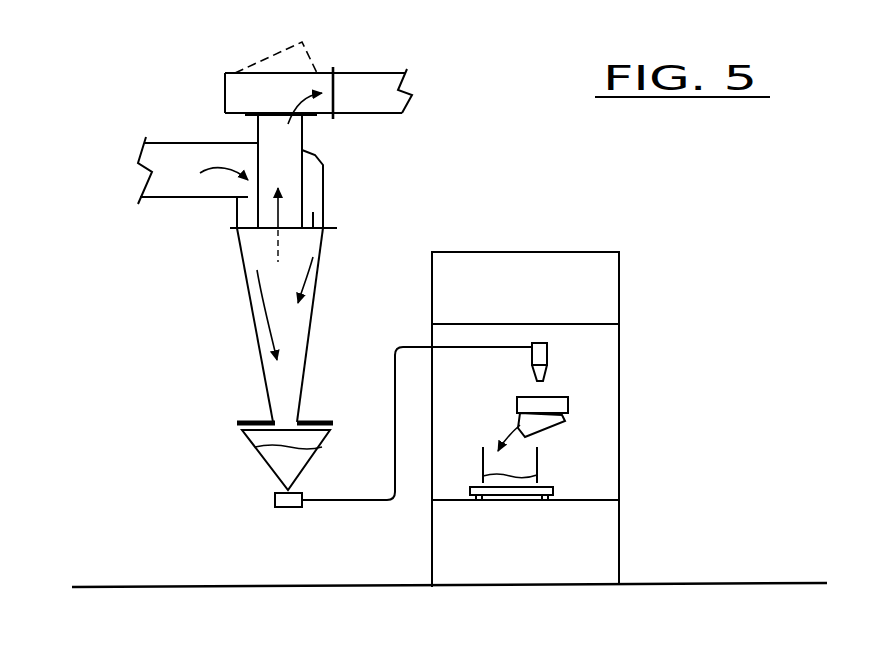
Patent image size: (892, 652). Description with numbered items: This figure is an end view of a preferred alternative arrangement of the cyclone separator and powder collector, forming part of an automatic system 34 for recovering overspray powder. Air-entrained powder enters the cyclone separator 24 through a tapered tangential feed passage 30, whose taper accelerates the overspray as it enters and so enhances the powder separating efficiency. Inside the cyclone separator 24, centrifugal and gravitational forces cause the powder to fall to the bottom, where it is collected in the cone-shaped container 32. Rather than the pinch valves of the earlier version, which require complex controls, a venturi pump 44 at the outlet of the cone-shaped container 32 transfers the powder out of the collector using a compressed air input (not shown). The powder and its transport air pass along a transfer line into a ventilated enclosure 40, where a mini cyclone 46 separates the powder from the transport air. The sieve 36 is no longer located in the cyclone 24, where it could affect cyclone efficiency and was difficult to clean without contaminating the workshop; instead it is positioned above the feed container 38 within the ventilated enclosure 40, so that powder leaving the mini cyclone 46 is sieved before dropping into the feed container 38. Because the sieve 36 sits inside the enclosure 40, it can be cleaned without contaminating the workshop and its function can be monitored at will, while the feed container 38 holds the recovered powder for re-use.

The tapered tangential feed passage 30 is at (192, 142).
The cyclone separator 24 is at (255, 247).
The cone-shaped container 32 is at (258, 438).
The venturi pump 44 is at (285, 508).
The automatic system 34 is at (584, 371).
The ventilated enclosure 40 is at (482, 277).
The mini cyclone 46 is at (547, 355).
The sieve 36 is at (560, 405).
The feed container 38 is at (522, 462).